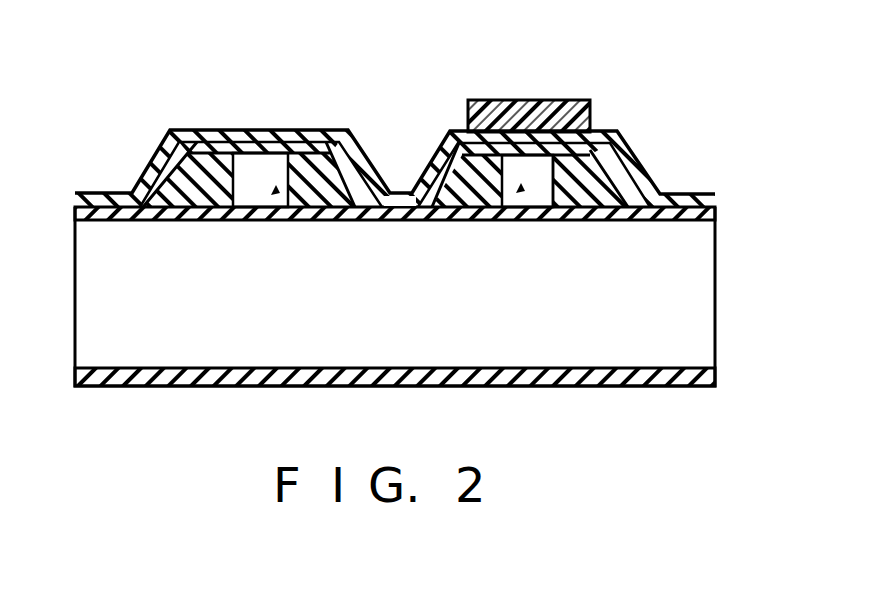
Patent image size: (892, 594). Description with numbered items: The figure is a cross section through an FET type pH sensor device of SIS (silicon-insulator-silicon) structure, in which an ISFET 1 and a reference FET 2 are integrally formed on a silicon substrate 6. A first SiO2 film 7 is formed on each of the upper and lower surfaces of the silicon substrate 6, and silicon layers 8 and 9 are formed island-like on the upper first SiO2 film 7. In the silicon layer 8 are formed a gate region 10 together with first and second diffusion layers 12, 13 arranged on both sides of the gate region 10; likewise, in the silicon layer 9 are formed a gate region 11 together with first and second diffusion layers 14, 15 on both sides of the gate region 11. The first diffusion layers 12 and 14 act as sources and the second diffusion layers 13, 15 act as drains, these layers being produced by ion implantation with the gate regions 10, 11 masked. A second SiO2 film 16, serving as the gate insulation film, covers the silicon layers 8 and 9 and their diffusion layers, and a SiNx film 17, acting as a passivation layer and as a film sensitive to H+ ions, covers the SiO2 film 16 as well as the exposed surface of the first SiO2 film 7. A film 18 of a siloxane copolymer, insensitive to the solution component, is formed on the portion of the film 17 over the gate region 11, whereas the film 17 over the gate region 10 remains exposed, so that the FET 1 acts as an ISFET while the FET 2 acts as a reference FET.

The ISFET 1 is at (249, 160).
The reference FET 2 is at (535, 151).
The silicon substrate 6 is at (715, 312).
The first SiO2 film 7 is at (715, 212).
The silicon layer 8 is at (275, 191).
The silicon layer 9 is at (520, 189).
The gate region 10 is at (250, 188).
The gate region 11 is at (545, 195).
The first diffusion layer 12 is at (188, 193).
The second diffusion layer 13 is at (323, 195).
The first diffusion layer 14 is at (455, 195).
The second diffusion layer 15 is at (606, 203).
The second SiO2 film 16 is at (605, 152).
The SiNx film 17 is at (195, 135).
The film of a siloxane copolymer 18 is at (560, 110).